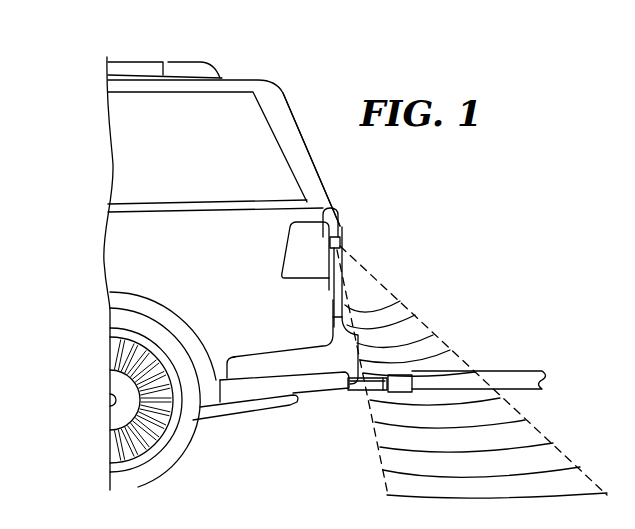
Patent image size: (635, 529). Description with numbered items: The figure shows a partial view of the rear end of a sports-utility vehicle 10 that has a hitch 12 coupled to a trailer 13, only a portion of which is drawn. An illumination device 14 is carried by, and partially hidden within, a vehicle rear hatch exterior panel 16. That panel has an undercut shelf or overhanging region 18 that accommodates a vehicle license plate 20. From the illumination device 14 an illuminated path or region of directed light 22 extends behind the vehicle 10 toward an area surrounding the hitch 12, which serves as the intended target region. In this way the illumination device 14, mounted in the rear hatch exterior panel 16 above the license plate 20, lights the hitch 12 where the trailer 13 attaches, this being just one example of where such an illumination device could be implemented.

The sports-utility vehicle 10 is at (293, 95).
The hitch 12 is at (374, 404).
The trailer 13 is at (530, 366).
The illumination device 14 is at (335, 204).
The vehicle rear hatch exterior panel 16 is at (345, 184).
The undercut shelf or overhanging region 18 is at (342, 244).
The vehicle license plate 20 is at (333, 306).
The illuminated path or region of directed light 22 is at (442, 323).